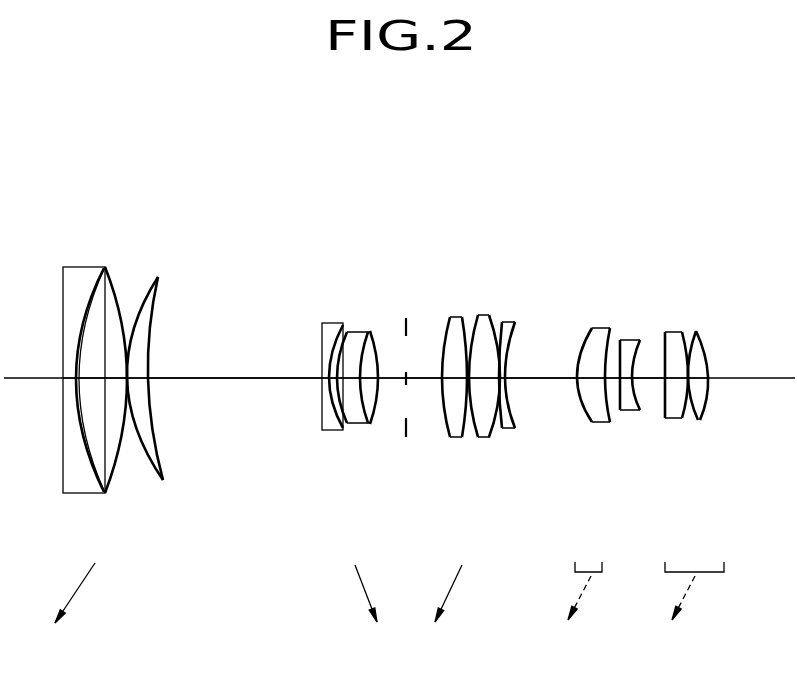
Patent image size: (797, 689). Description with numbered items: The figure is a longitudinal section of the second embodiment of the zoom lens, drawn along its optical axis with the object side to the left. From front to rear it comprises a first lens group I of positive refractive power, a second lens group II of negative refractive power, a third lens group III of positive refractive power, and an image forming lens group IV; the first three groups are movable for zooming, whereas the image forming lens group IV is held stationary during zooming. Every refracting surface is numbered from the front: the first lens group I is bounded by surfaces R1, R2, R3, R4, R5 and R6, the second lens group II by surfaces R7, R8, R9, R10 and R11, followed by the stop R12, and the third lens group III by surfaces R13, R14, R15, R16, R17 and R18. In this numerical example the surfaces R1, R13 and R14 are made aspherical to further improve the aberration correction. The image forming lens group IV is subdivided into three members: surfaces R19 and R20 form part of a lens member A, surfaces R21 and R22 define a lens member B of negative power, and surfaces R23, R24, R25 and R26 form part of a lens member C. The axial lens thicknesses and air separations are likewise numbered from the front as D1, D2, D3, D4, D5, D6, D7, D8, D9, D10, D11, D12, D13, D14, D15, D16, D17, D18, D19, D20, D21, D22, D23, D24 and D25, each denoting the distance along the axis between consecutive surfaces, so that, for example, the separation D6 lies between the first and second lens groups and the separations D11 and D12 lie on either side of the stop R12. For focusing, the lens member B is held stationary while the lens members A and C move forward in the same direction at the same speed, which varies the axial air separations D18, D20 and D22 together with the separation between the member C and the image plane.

The first lens group I is at (194, 160).
The second lens group II is at (383, 158).
The third lens group III is at (540, 158).
The image forming lens group IV is at (747, 157).
The lens member A is at (624, 234).
The lens member B is at (607, 198).
The lens member C is at (783, 234).
The first lens surface R1 is at (63, 300).
The second lens surface R2 is at (79, 292).
The third lens surface R3 is at (88, 300).
The fourth lens surface R4 is at (116, 300).
The fifth lens surface R5 is at (136, 318).
The sixth lens surface R6 is at (158, 295).
The seventh lens surface R7 is at (320, 352).
The eighth lens surface R8 is at (332, 332).
The ninth lens surface R9 is at (343, 327).
The tenth lens surface R10 is at (362, 320).
The eleventh lens surface R11 is at (377, 330).
The stop R12 is at (406, 318).
The thirteenth lens surface R13 is at (440, 338).
The fourteenth lens surface R14 is at (461, 318).
The fifteenth lens surface R15 is at (473, 320).
The sixteenth lens surface R16 is at (492, 318).
The seventeenth lens surface R17 is at (504, 320).
The eighteenth lens surface R18 is at (517, 330).
The nineteenth lens surface R19 is at (579, 345).
The twentieth lens surface R20 is at (601, 330).
The twenty-first lens surface R21 is at (619, 340).
The twenty-second lens surface R22 is at (632, 345).
The twenty-third lens surface R23 is at (663, 345).
The twenty-fourth lens surface R24 is at (686, 335).
The twenty-fifth lens surface R25 is at (697, 335).
The twenty-sixth lens surface R26 is at (710, 345).
The first lens thickness or air separation D1 is at (69, 384).
The second lens thickness or air separation D2 is at (78, 384).
The third lens thickness or air separation D3 is at (103, 384).
The fourth lens thickness or air separation D4 is at (127, 384).
The fifth lens thickness or air separation D5 is at (138, 384).
The sixth lens thickness or air separation D6 is at (217, 384).
The seventh lens thickness or air separation D7 is at (326, 384).
The eighth lens thickness or air separation D8 is at (333, 384).
The ninth lens thickness or air separation D9 is at (348, 384).
The tenth lens thickness or air separation D10 is at (369, 384).
The eleventh lens thickness or air separation D11 is at (392, 384).
The twelfth lens thickness or air separation D12 is at (424, 384).
The thirteenth lens thickness or air separation D13 is at (455, 384).
The fourteenth lens thickness or air separation D14 is at (468, 384).
The fifteenth lens thickness or air separation D15 is at (485, 384).
The sixteenth lens thickness or air separation D16 is at (500, 384).
The seventeenth lens thickness or air separation D17 is at (503, 384).
The eighteenth air separation D18 is at (541, 384).
The nineteenth lens thickness or air separation D19 is at (591, 384).
The twentieth air separation D20 is at (612, 384).
The twenty-first lens thickness or air separation D21 is at (626, 384).
The twenty-second air separation D22 is at (648, 384).
The twenty-third lens thickness or air separation D23 is at (676, 384).
The twenty-fourth lens thickness or air separation D24 is at (688, 384).
The twenty-fifth lens thickness or air separation D25 is at (697, 384).